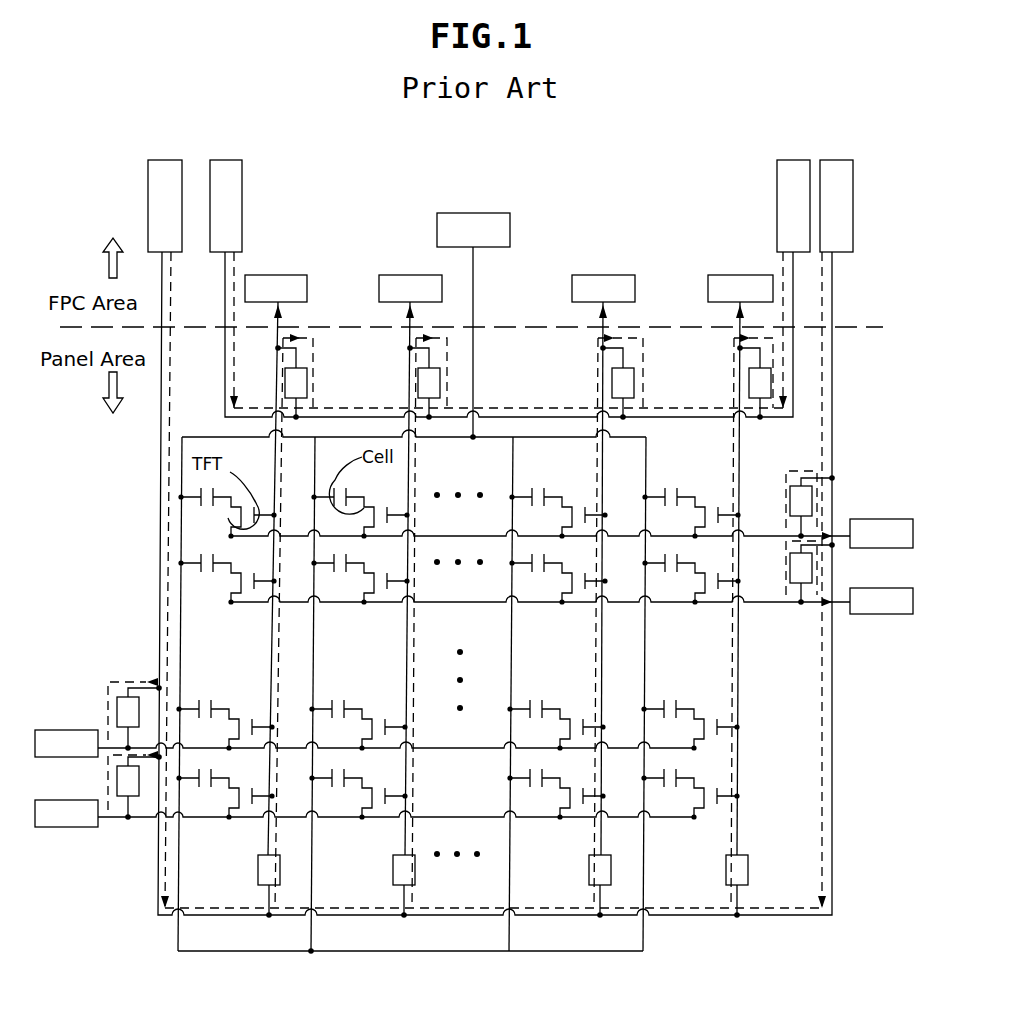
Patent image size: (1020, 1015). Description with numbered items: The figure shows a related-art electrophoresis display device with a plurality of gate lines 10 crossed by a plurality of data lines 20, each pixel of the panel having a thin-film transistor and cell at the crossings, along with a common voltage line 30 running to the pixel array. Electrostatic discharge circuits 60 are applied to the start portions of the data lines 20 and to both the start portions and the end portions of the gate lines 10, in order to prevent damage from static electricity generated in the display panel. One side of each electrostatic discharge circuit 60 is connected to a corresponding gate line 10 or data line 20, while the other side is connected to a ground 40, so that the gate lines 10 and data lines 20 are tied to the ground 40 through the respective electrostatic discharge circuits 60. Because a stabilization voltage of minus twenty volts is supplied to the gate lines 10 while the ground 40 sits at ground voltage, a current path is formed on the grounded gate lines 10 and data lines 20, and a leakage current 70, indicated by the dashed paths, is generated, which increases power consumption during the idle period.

The gate line 10 is at (275, 677).
The data line 20 is at (203, 818).
The common voltage line 30 is at (473, 297).
The ground 40 is at (242, 215).
The electrostatic discharge circuit 60 is at (307, 382).
The leakage current 70 is at (172, 410).